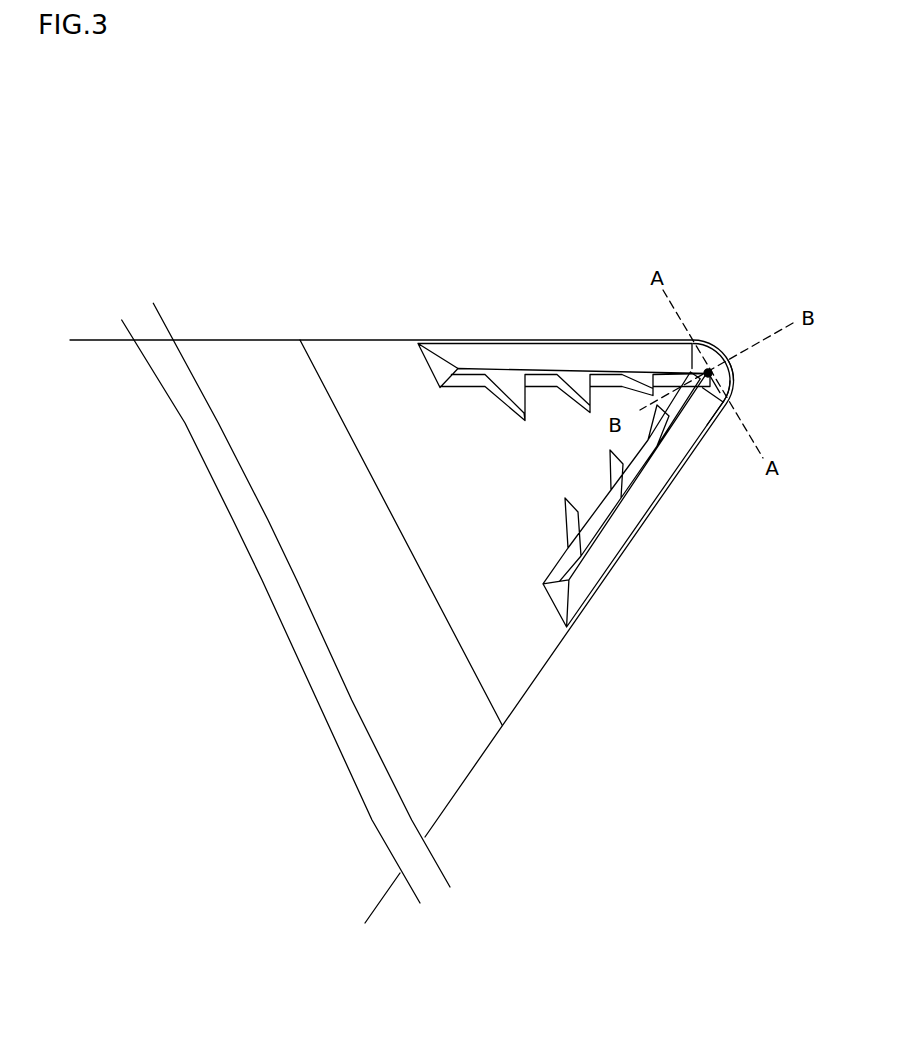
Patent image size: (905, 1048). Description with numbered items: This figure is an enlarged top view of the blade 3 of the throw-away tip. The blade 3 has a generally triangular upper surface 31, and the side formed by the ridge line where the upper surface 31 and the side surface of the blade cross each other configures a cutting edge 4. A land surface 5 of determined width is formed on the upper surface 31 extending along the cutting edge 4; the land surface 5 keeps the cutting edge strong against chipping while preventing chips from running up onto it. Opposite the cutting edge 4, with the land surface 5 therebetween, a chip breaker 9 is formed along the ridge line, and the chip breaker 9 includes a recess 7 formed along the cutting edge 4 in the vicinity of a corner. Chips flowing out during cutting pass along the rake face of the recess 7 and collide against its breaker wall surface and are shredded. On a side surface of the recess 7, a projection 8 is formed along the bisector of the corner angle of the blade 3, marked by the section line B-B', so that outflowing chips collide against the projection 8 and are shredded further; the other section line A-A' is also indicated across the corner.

The blade 3 is at (332, 340).
The upper surface 31 is at (375, 357).
The chip breaker 9 is at (595, 358).
The land surface 5 is at (713, 342).
The cutting edge 4 is at (735, 380).
The recess 7 is at (732, 391).
The projection 8 is at (719, 404).